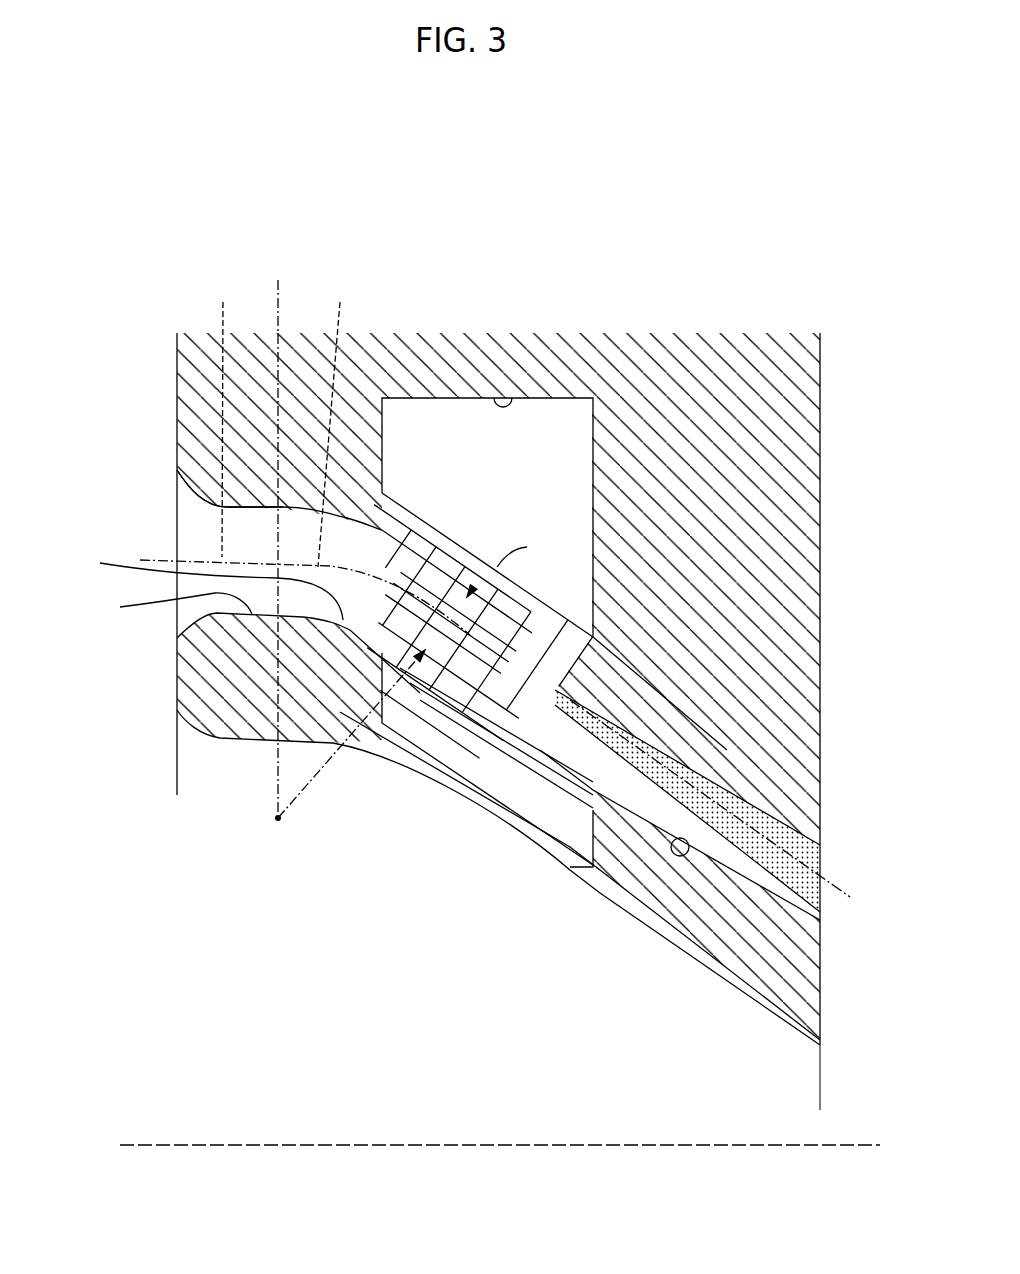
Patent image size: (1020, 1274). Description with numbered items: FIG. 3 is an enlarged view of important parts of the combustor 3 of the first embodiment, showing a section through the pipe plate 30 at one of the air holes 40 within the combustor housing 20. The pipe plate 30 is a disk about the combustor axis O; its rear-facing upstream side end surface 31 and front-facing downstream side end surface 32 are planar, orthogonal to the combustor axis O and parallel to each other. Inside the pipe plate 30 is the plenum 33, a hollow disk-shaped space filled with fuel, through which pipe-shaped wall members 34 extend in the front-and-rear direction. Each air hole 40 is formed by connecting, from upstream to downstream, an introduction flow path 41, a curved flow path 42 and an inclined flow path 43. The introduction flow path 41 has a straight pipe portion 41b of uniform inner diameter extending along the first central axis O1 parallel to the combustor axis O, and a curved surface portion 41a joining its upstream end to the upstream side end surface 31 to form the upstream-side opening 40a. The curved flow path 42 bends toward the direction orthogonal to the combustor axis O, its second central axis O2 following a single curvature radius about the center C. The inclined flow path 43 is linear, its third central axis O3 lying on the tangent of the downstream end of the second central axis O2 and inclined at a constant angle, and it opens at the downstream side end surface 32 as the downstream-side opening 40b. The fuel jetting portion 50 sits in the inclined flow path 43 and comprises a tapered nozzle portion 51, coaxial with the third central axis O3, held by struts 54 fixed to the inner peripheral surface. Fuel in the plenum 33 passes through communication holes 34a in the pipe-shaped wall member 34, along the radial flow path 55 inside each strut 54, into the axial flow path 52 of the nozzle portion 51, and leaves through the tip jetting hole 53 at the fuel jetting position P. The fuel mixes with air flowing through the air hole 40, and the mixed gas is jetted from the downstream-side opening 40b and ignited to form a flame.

The valve device 3 is at (800, 267).
The housing 20 is at (740, 283).
The pipe plate 30 is at (691, 360).
The upstream side end surface 31 is at (177, 407).
The downstream side end surface 32 is at (820, 411).
The plenum 33 is at (504, 396).
The pipe-shaped wall member 34 is at (533, 700).
The communication hole 34a is at (467, 597).
The air hole 40 is at (647, 727).
The upstream-side opening 40a is at (177, 520).
The downstream-side opening 40b is at (823, 930).
The introduction flow path 41 is at (75, 585).
The curved surface portion 41a is at (187, 623).
The straight pipe portion 41b is at (166, 606).
The curved flow path 42 is at (207, 586).
The inclined flow path 43 is at (667, 852).
The fuel jetting portion 50 is at (545, 612).
The nozzle portion 51 is at (523, 637).
The axial flow path 52 is at (507, 700).
The tip jetting hole 53 is at (567, 720).
The strut 54 is at (453, 600).
The radial flow path 55 is at (458, 590).
The center C is at (347, 568).
The fuel jetting position P is at (530, 720).
The combustor axis O is at (650, 1147).
The first central axis O1 is at (222, 415).
The second central axis O2 is at (335, 420).
The third central axis O3 is at (700, 767).